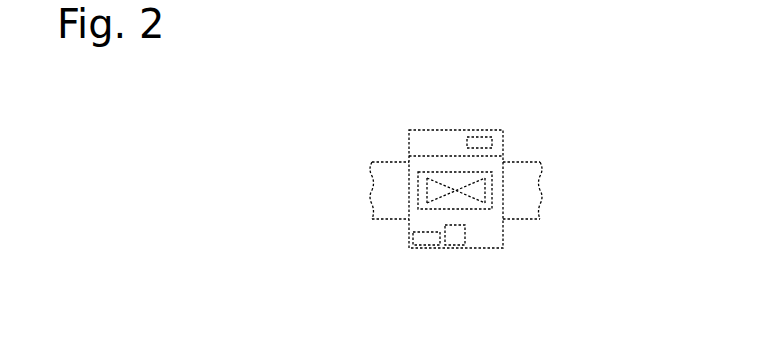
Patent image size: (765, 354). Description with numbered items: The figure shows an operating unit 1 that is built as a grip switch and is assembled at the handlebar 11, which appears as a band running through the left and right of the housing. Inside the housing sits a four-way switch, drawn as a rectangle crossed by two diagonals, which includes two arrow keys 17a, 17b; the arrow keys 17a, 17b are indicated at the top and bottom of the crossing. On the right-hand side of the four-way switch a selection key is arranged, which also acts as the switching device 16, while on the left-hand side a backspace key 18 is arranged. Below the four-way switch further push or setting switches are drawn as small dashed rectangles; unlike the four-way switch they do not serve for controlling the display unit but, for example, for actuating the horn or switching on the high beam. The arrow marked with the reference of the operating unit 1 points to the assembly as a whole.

The operating unit 1 is at (540, 103).
The handlebar 11 is at (392, 205).
The switching device 16 is at (488, 200).
The arrow key 17a is at (455, 182).
The arrow key 17b is at (457, 200).
The backspace key 18 is at (432, 202).